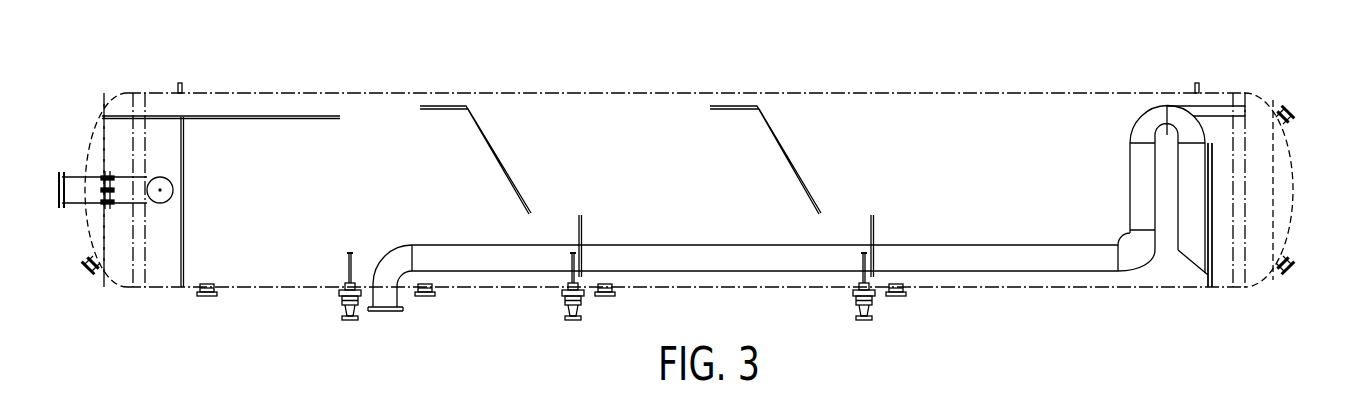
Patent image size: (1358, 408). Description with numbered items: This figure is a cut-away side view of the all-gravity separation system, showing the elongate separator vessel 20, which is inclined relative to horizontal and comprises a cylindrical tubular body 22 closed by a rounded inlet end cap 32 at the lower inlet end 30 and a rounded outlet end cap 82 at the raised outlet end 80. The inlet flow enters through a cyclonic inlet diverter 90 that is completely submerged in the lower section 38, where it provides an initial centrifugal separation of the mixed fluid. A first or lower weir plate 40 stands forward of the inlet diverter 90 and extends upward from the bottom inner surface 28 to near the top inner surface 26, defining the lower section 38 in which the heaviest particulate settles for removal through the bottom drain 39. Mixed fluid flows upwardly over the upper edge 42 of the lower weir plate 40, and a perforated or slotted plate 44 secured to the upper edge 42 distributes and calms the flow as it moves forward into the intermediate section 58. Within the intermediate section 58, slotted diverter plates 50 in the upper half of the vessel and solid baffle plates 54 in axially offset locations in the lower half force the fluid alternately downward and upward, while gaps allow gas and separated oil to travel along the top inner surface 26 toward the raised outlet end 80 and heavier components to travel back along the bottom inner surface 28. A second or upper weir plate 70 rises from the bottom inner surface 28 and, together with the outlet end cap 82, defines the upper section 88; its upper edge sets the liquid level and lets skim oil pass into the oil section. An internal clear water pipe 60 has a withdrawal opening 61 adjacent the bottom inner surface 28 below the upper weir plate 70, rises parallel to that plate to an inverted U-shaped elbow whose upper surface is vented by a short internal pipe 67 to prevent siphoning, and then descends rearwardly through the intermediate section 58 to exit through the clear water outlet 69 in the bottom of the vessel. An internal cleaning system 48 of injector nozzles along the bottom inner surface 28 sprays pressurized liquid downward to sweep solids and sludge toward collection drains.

The separator vessel 20 is at (980, 66).
The tubular body 22 is at (688, 93).
The top inner surface 26 is at (604, 100).
The bottom inner surface 28 is at (303, 268).
The first head 30 is at (78, 106).
The inlet end cap 32 is at (88, 228).
The lower section 38 is at (117, 256).
The bottom drain 39 is at (88, 267).
The lower weir plate 40 is at (180, 264).
The upper edge 42 is at (195, 132).
The perforated or slotted plate 44 is at (236, 117).
The internal cleaning system 48 is at (366, 256).
The slotted diverter plates 50 is at (500, 158).
The solid baffle plates 54 is at (582, 233).
The intermediate section 58 is at (942, 179).
The internal clear water pipe 60 is at (727, 245).
The withdrawal opening 61 is at (1186, 263).
The short internal pipe 67 is at (1210, 108).
The clear water outlet 69 is at (394, 319).
The upper weir plate 70 is at (1211, 274).
The raised outlet end 80 is at (1307, 151).
The outlet end cap 82 is at (1293, 187).
The upper section 88 is at (1234, 206).
The cyclonic inlet diverter 90 is at (160, 176).